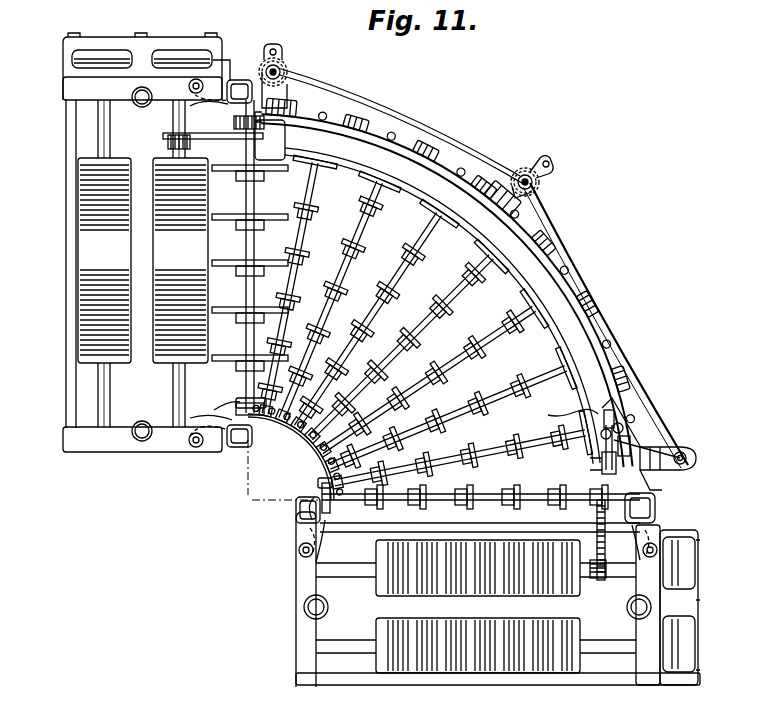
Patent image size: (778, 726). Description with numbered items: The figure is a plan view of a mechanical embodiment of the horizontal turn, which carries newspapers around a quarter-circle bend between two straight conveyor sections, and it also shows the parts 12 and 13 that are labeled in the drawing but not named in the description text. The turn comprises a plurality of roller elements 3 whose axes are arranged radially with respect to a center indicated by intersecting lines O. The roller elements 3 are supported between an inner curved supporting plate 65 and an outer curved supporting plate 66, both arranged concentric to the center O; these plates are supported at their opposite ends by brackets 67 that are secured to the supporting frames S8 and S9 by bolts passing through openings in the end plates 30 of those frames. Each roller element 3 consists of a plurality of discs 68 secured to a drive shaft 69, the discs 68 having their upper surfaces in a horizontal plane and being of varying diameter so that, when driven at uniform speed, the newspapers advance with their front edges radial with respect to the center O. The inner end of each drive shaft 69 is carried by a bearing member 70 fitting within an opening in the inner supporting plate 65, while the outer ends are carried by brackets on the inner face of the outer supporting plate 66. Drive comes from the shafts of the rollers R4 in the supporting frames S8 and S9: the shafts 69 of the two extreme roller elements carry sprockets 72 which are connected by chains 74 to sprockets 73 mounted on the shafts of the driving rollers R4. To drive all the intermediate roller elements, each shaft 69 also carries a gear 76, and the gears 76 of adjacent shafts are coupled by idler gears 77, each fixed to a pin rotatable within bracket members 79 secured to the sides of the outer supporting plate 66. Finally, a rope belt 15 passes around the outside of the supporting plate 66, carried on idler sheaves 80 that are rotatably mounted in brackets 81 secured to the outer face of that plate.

The roller element 3 is at (458, 316).
The bolt 12 is at (322, 490).
The link 13 is at (608, 464).
The rope belt 15 is at (580, 270).
The end plate 30 is at (66, 80).
The curved supporting plate 65 is at (312, 442).
The curved supporting plate 66 is at (448, 165).
The bracket 67 is at (208, 88).
The disc 68 is at (376, 320).
The drive shaft 69 is at (312, 198).
The bearing member 70 is at (258, 418).
The sprocket 72 is at (258, 140).
The sprocket 73 is at (170, 142).
The chain 74 is at (192, 140).
The gear 76 is at (604, 412).
The idler gear 77 is at (630, 444).
The bracket member 79 is at (602, 318).
The idler sheave 80 is at (276, 66).
The bracket 81 is at (290, 82).
The center O is at (275, 482).
The roller R4 is at (156, 355).
The supporting frame S8 is at (298, 626).
The supporting frame S9 is at (160, 445).